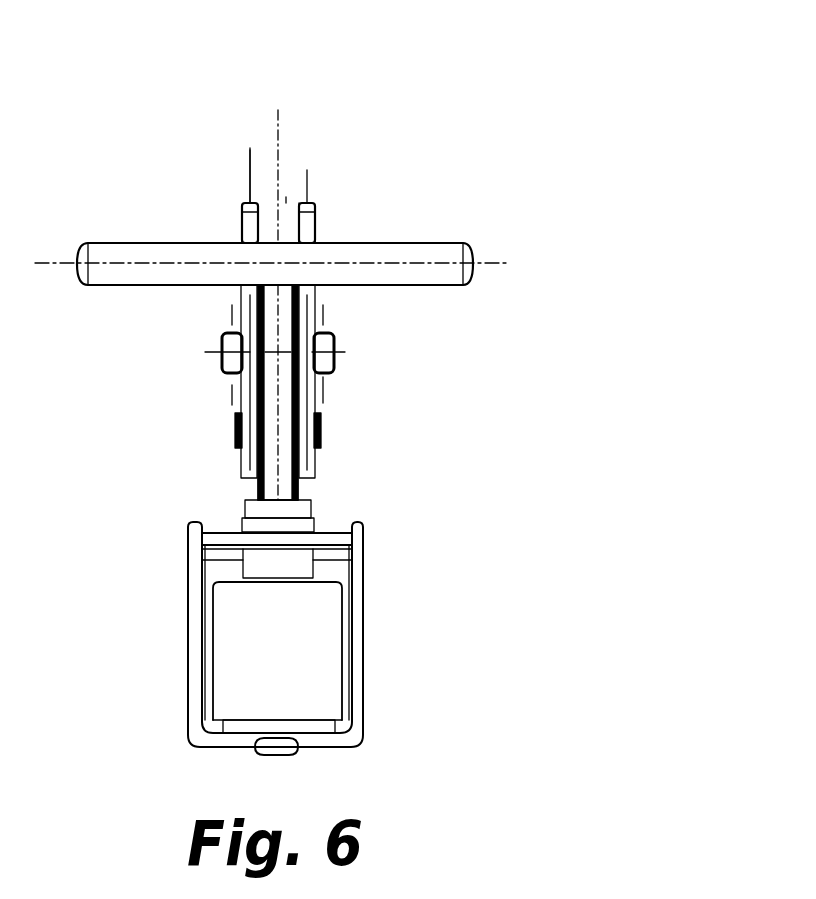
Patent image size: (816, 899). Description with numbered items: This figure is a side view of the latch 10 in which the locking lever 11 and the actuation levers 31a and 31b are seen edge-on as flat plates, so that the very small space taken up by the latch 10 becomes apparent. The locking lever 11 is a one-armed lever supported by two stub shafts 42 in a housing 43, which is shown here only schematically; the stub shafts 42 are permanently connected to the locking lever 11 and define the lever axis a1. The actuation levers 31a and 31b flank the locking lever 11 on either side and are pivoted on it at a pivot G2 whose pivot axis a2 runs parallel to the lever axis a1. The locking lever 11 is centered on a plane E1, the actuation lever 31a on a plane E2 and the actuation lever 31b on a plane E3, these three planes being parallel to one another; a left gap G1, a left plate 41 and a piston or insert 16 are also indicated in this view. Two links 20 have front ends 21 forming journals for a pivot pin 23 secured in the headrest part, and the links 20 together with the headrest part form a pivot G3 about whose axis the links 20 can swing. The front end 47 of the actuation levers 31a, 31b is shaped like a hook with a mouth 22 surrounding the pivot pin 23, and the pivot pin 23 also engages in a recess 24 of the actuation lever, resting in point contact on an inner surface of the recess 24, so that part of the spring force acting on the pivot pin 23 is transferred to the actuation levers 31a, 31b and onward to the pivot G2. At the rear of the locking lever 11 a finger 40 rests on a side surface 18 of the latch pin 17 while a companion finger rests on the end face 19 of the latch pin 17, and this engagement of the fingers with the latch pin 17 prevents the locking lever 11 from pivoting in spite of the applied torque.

The latch 10 is at (440, 119).
The locking lever 11 is at (281, 328).
The piston / insert 16 is at (236, 677).
The latch pin 17 is at (315, 510).
The side surface 18 is at (310, 495).
The end face 19 is at (239, 508).
The link 20 is at (311, 455).
The front end 21 is at (320, 186).
The mouth 22 is at (244, 220).
The pivot pin 23 is at (427, 252).
The recess 24 is at (232, 296).
The actuation lever 31a is at (232, 231).
The actuation lever 31b is at (319, 231).
The finger 40 is at (188, 522).
The left plate 41 is at (275, 490).
The stub shaft 42 is at (222, 343).
The housing 43 is at (231, 441).
The front end 47 is at (241, 186).
The plane E1 is at (277, 138).
The plane E2 is at (248, 150).
The plane E3 is at (286, 196).
The left gap G1 is at (221, 394).
The pivot G2 is at (329, 424).
The pivot G3 is at (308, 172).
The lever axis a1 is at (211, 378).
The pivot axis a2 is at (271, 462).